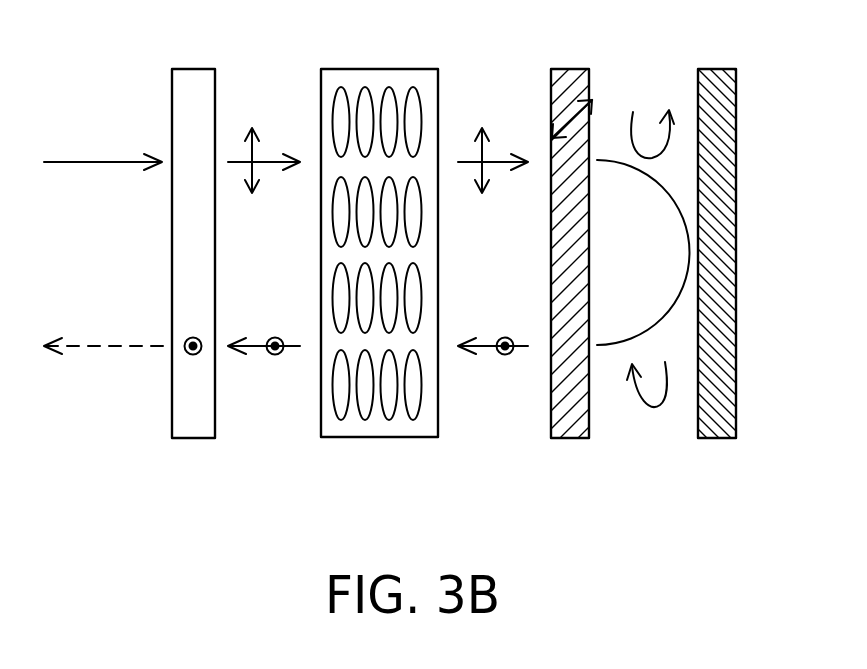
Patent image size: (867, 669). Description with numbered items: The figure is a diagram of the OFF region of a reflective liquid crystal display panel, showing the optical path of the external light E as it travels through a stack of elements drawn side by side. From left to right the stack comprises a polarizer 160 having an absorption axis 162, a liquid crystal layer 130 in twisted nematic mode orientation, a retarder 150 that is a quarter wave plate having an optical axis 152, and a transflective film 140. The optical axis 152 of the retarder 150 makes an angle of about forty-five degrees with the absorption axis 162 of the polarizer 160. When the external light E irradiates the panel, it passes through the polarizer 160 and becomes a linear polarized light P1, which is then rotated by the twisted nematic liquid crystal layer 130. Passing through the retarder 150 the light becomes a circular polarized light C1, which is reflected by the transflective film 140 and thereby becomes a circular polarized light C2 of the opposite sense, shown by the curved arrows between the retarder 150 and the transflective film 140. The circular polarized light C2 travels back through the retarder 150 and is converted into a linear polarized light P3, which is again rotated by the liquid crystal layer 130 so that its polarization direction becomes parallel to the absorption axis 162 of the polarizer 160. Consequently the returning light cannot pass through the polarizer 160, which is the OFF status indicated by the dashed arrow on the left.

The liquid crystal layer 130 is at (373, 428).
The transflective film 140 is at (713, 438).
The retarder 150 is at (572, 428).
The optical axis 152 is at (566, 122).
The polarizer 160 is at (196, 432).
The absorption axis 162 is at (190, 356).
The external light E is at (97, 158).
The linear polarized light P1 is at (270, 158).
The linear polarized light P3 is at (257, 358).
The circular polarized light C1 is at (641, 132).
The circular polarized light C2 is at (637, 421).
The OFF status OFF is at (103, 367).